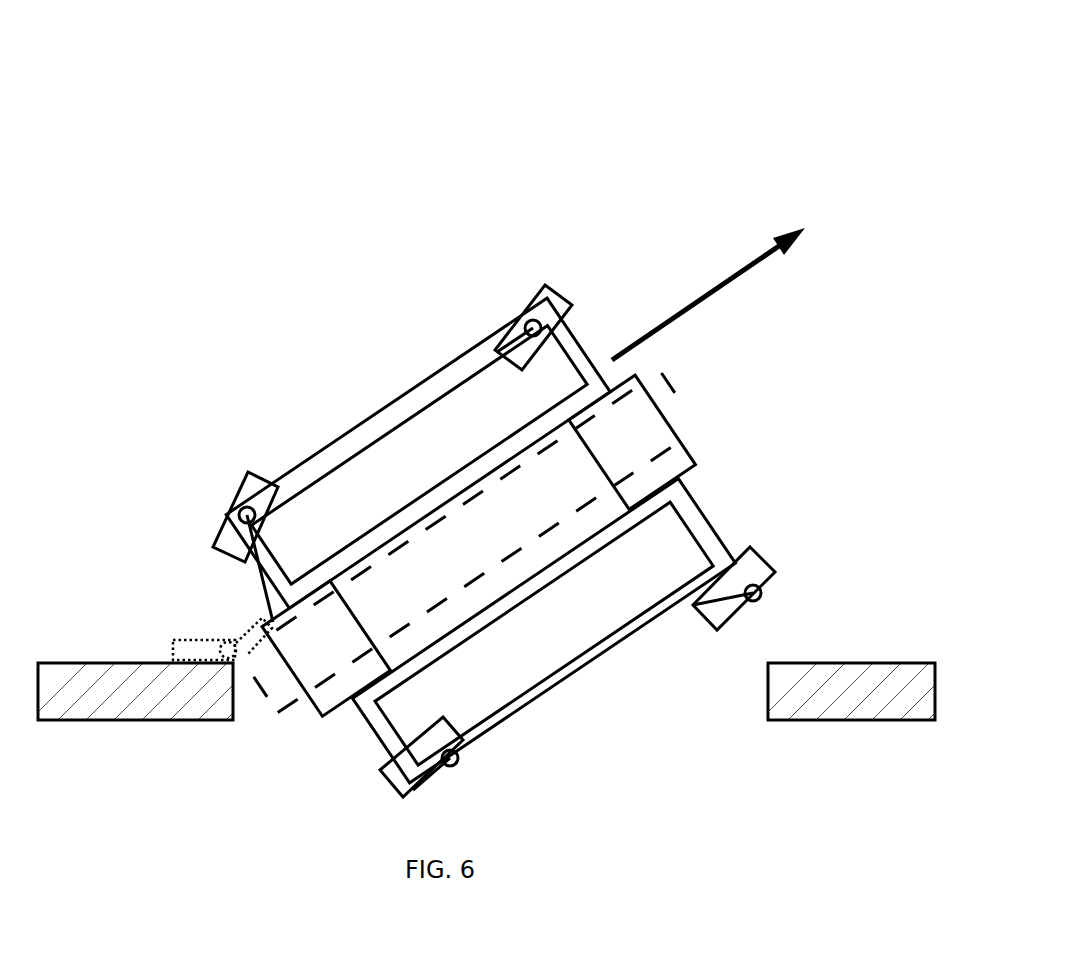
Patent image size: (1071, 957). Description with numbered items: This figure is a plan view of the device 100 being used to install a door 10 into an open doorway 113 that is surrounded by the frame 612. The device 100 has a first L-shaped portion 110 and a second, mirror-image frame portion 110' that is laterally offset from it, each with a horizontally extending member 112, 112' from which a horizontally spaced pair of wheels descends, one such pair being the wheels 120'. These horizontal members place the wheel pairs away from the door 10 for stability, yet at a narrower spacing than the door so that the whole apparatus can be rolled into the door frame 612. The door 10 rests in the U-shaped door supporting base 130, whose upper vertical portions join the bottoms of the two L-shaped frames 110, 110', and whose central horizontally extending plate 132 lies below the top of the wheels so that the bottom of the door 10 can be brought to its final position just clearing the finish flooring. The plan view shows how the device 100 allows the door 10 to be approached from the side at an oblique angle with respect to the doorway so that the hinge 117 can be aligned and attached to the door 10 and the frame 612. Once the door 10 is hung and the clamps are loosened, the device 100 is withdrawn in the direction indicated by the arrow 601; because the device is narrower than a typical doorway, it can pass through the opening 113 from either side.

The device 100 is at (330, 136).
The door 10 is at (450, 517).
The first portion 110 is at (332, 341).
The second frame portion 110' is at (597, 710).
The horizontally extending member 112 is at (373, 386).
The second panel 112' is at (600, 716).
The open doorway 113 is at (628, 727).
The hinge 117 is at (195, 633).
The wheels 120' is at (774, 522).
The U-shaped door supporting base 130 is at (626, 312).
The horizontally extending plate 132 is at (668, 423).
The direction of movement 601 is at (722, 268).
The frame 612 is at (141, 705).